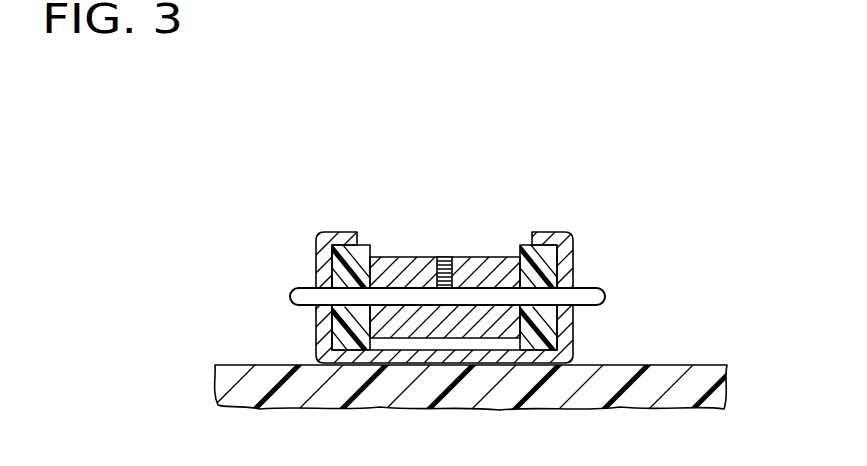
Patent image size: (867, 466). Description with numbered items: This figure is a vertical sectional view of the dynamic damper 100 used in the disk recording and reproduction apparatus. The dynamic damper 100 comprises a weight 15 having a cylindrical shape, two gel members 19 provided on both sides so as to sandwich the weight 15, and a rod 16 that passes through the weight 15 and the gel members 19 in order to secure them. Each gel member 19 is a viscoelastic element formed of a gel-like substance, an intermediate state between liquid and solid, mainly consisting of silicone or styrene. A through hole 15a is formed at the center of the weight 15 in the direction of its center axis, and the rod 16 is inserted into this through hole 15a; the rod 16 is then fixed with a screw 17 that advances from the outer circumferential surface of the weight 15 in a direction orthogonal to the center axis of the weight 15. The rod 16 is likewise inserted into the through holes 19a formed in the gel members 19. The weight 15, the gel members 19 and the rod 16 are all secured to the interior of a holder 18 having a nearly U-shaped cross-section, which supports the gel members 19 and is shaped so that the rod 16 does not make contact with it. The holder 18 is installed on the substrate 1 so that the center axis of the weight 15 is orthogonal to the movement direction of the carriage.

The substrate 1 is at (697, 372).
The weight 15 is at (489, 257).
The through hole 15a is at (478, 300).
The rod 16 is at (592, 288).
The screw 17 is at (445, 257).
The holder 18 is at (563, 333).
The gel member 19 is at (342, 241).
The through hole 19a is at (352, 297).
The dynamic damper 100 is at (391, 214).